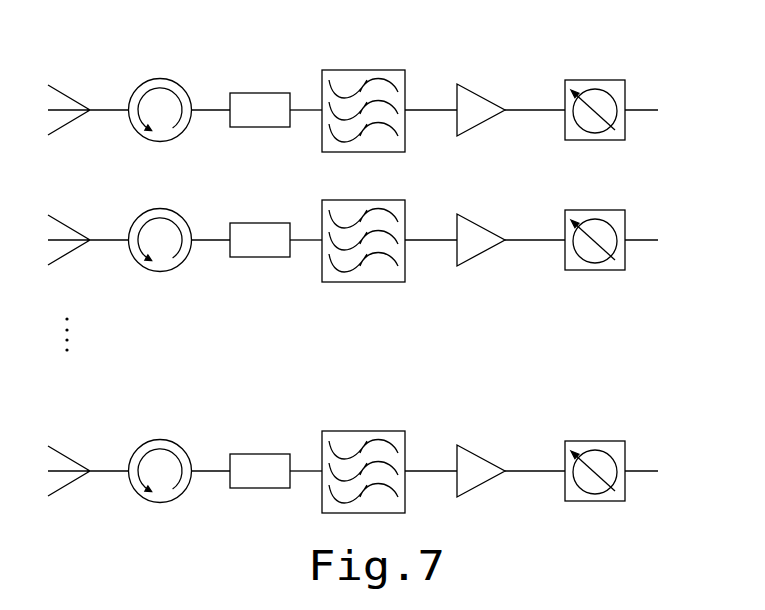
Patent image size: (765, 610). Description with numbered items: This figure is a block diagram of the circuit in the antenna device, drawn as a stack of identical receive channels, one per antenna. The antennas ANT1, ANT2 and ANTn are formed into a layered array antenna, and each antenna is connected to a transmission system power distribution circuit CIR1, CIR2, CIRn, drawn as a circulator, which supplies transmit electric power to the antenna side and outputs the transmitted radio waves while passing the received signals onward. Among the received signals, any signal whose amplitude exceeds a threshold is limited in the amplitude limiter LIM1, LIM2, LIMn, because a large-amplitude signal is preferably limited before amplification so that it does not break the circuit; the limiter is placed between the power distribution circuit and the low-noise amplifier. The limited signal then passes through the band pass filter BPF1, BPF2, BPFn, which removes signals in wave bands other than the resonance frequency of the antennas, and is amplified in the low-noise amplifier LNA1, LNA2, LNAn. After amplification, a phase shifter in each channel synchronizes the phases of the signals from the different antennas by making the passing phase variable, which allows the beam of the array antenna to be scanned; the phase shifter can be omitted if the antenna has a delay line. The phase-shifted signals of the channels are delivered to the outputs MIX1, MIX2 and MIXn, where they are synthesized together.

The antenna ANT1 is at (82, 93).
The transmission system power distribution circuit CIR1 is at (160, 78).
The amplitude limiter LIM1 is at (276, 90).
The band pass filter BPF1 is at (389, 95).
The low-noise amplifier LNA1 is at (510, 91).
The mixer output MIX1 is at (669, 111).
The antenna ANT2 is at (82, 223).
The transmission system power distribution circuit CIR2 is at (160, 208).
The amplitude limiter LIM2 is at (276, 220).
The band pass filter BPF2 is at (389, 225).
The low-noise amplifier LNA2 is at (510, 221).
The mixer output MIX2 is at (669, 241).
The antenna ANTn is at (82, 454).
The transmission system power distribution circuit CIRn is at (160, 440).
The amplitude limiter LIMn is at (276, 451).
The band pass filter BPFn is at (389, 456).
The low-noise amplifier LNAn is at (510, 452).
The mixer output MIXn is at (669, 472).